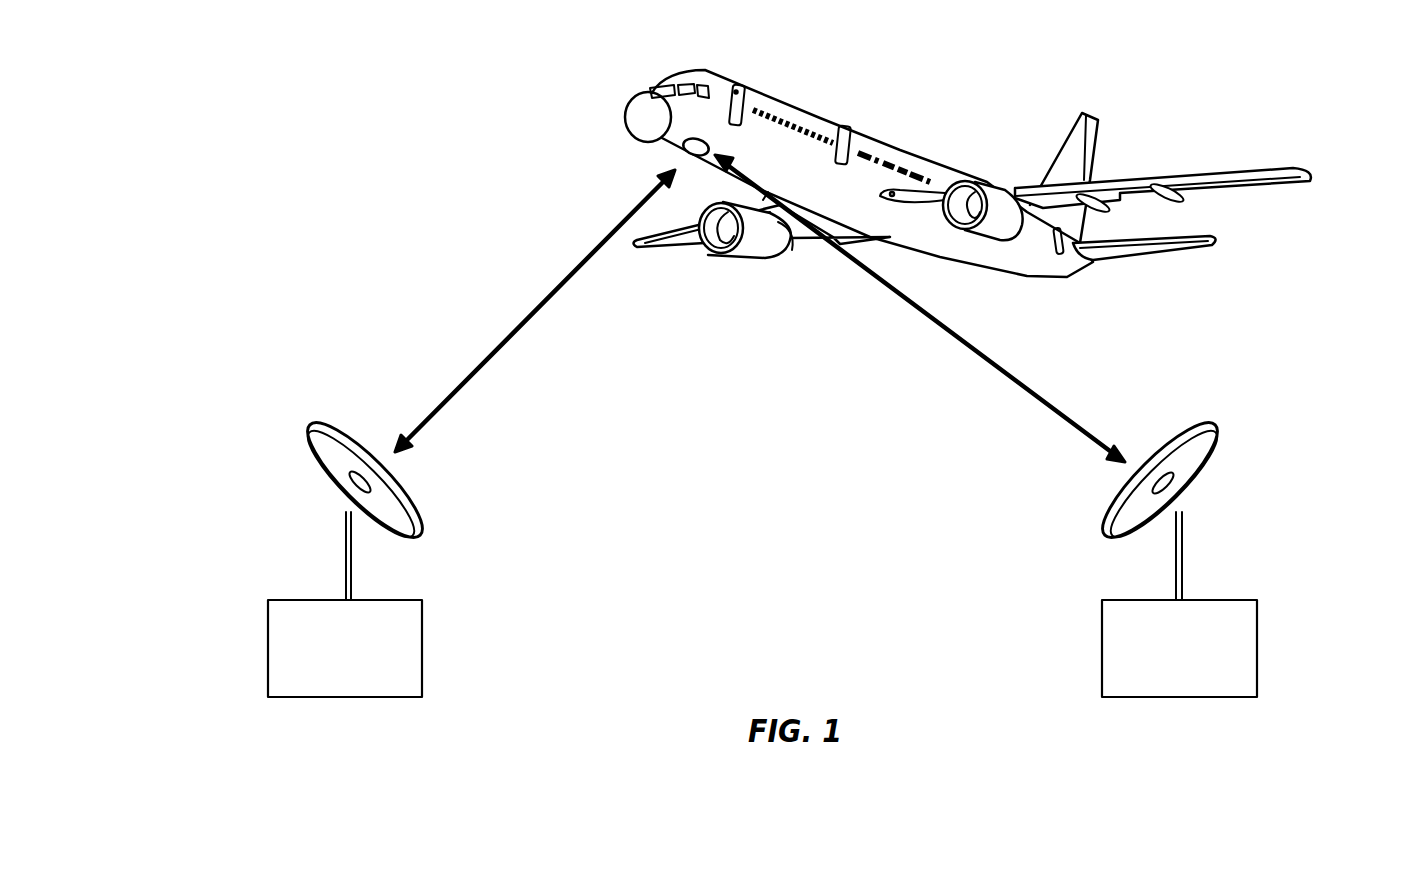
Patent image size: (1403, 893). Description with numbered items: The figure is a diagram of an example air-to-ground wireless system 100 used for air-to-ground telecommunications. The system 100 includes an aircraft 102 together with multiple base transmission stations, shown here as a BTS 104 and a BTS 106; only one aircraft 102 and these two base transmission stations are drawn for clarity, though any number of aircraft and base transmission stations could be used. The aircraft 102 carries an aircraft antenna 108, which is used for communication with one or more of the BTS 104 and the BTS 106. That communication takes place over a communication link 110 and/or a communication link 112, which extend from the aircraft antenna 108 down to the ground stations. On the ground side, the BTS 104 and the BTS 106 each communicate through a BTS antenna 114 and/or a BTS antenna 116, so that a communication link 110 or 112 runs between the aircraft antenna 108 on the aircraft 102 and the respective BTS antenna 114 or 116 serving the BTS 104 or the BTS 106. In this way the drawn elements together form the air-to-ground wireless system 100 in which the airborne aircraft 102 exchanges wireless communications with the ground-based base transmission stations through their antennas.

The air-to-ground wireless system 100 is at (215, 169).
The aircraft 102 is at (832, 103).
The base transmission station (BTS) 104 is at (1187, 697).
The base transmission station (BTS) 106 is at (353, 697).
The aircraft antenna 108 is at (684, 150).
The communication link 110 is at (988, 362).
The communication link 112 is at (515, 330).
The BTS antenna 114 is at (1270, 390).
The BTS antenna 116 is at (301, 437).